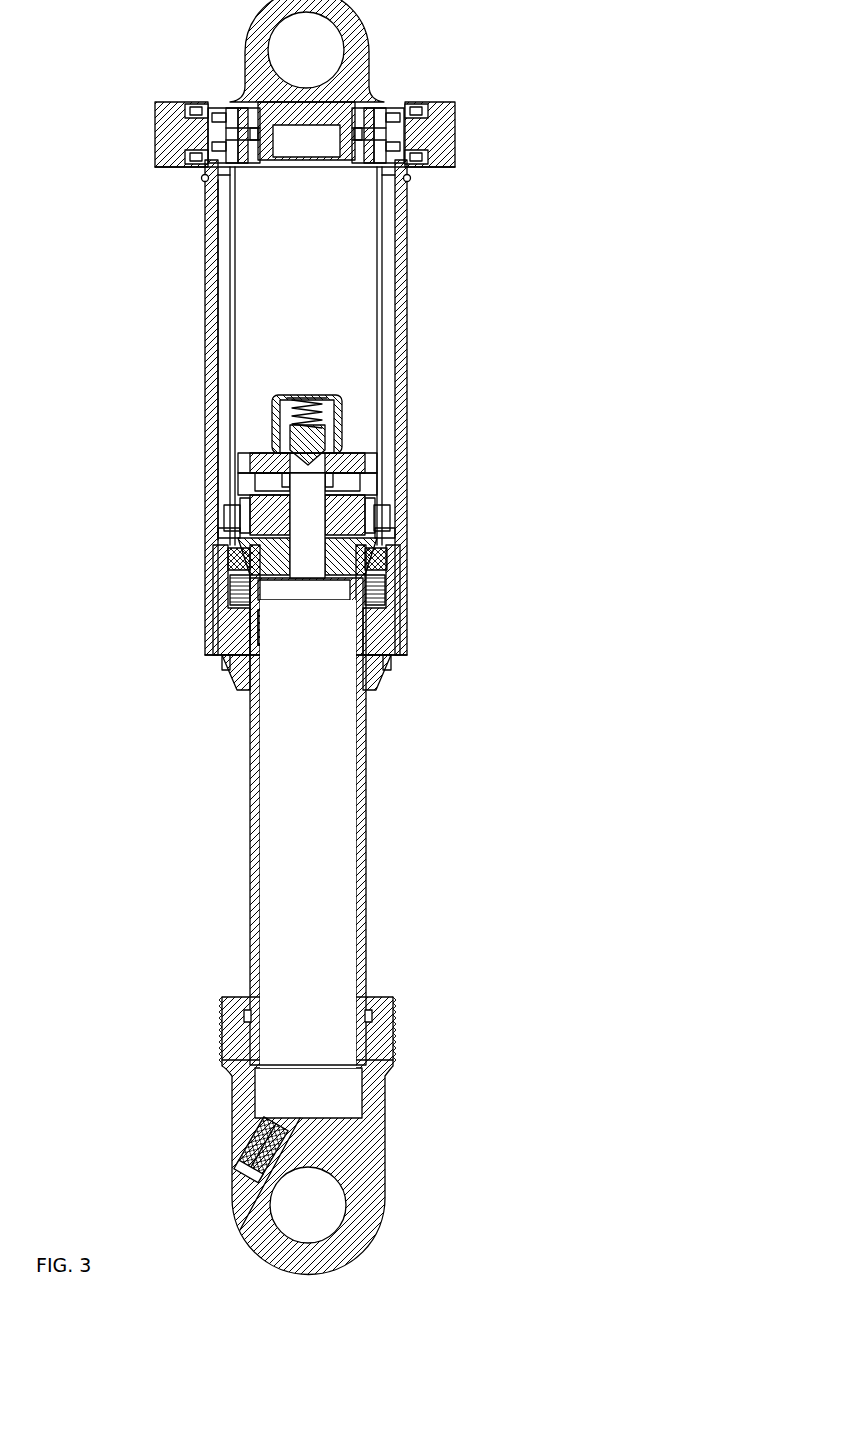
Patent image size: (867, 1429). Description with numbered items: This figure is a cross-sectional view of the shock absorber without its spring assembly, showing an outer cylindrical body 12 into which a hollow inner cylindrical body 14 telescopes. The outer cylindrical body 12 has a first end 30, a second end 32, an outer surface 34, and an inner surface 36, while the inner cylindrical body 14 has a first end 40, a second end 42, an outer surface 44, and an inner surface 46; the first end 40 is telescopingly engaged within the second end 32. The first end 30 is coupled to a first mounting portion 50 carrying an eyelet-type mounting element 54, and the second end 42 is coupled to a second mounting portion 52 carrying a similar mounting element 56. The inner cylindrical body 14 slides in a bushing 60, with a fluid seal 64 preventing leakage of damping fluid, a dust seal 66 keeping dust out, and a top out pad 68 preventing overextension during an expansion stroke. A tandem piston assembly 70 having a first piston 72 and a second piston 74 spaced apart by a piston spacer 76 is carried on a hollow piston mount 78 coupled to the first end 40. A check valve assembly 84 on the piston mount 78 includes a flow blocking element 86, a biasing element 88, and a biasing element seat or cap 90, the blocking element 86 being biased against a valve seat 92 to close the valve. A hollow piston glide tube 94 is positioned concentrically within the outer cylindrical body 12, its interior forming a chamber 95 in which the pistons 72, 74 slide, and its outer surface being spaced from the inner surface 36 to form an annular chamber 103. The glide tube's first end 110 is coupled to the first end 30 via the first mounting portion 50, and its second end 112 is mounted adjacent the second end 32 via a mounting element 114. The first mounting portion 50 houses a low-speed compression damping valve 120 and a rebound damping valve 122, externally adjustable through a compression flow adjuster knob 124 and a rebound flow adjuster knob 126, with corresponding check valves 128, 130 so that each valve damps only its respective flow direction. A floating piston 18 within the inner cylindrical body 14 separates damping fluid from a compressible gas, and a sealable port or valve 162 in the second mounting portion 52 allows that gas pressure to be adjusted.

The outer cylindrical body 12 is at (413, 273).
The inner cylindrical body 14 is at (351, 769).
The floating piston 18 is at (388, 606).
The first end 30 is at (310, 407).
The second end 32 is at (462, 643).
The outer surface 34 is at (398, 345).
The inner surface 36 is at (384, 328).
The first end 40 is at (348, 660).
The second end 42 is at (374, 978).
The outer surface 44 is at (366, 806).
The inner surface 46 is at (357, 790).
The first mounting portion 50 is at (458, 54).
The second mounting portion 52 is at (313, 937).
The mounting element 54 is at (344, 32).
The mounting element 56 is at (366, 1233).
The bushing 60 is at (232, 624).
The fluid seal 64 is at (236, 595).
The dust seal 66 is at (245, 668).
The top out pad 68 is at (238, 558).
The tandem piston assembly 70 is at (244, 486).
The first piston 72 is at (242, 455).
The second piston 74 is at (240, 530).
The piston spacer 76 is at (334, 490).
The piston mount 78 is at (374, 560).
The check valve assembly 84 is at (350, 407).
The flow blocking element 86 is at (322, 395).
The biasing element 88 is at (298, 396).
The biasing element seat or cap 90 is at (292, 396).
The valve seat 92 is at (287, 428).
The piston glide tube 94 is at (238, 236).
The chamber 95 is at (313, 293).
The annular chamber 103 is at (227, 300).
The first end 110 is at (232, 180).
The second end 112 is at (372, 505).
The mounting element 114 is at (392, 522).
The compression damping valve 120 is at (236, 108).
The rebound damping valve 122 is at (400, 108).
The compression flow adjuster knob 124 is at (170, 140).
The rebound flow adjuster knob 126 is at (458, 150).
The check valve 128 is at (252, 108).
The check valve 130 is at (362, 110).
The sealable port or valve 162 is at (248, 1160).